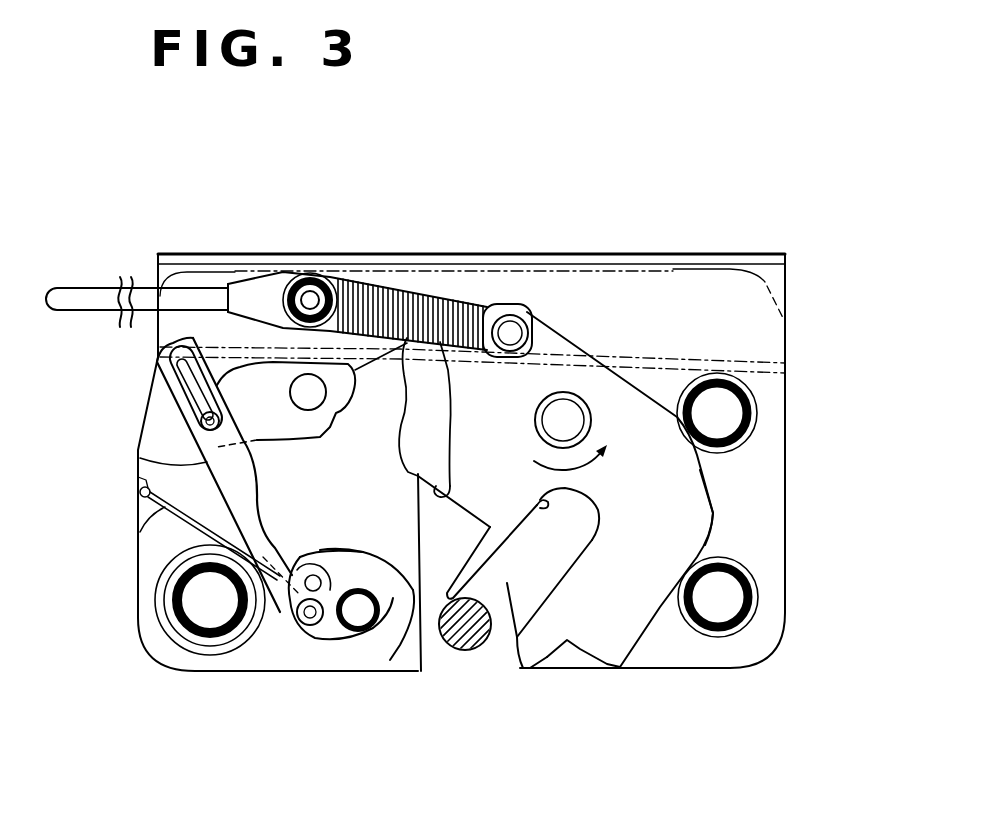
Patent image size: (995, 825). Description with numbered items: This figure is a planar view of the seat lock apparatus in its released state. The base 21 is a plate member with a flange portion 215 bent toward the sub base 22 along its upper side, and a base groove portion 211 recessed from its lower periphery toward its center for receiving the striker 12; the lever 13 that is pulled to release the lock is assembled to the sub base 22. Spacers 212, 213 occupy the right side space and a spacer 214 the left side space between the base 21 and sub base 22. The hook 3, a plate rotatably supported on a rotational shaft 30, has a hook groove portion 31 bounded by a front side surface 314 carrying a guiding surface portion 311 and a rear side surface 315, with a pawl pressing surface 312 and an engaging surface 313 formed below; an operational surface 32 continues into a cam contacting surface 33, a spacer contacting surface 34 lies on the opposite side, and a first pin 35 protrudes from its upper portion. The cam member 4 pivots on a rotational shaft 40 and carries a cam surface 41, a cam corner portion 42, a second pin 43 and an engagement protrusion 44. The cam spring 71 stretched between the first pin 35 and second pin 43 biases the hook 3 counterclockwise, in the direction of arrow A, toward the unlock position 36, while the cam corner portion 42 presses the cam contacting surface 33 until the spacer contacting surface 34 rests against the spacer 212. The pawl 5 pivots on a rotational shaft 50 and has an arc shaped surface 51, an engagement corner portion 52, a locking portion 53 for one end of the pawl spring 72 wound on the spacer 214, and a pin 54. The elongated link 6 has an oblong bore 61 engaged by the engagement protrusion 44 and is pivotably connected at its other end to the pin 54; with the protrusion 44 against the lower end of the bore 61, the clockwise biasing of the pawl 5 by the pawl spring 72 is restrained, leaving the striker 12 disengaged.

The hook 3 is at (642, 535).
The cam member 4 is at (345, 418).
The pawl 5 is at (347, 562).
The link 6 is at (203, 467).
The striker 12 is at (465, 651).
The lever 13 is at (133, 277).
The base 21 is at (742, 246).
The sub base 22 is at (788, 282).
The rotational shaft 30 is at (570, 412).
The hook groove portion 31 is at (503, 602).
The operational surface 32 is at (450, 485).
The cam contacting surface 33 is at (484, 300).
The spacer contacting surface 34 is at (712, 491).
The first pin 35 is at (511, 313).
The unlock position 36 is at (724, 513).
The rotational shaft 40 is at (310, 400).
The cam surface 41 is at (393, 275).
The cam corner portion 42 is at (403, 273).
The second pin 43 is at (310, 272).
The engagement protrusion 44 is at (170, 427).
The rotational shaft 50 is at (356, 632).
The arc shaped surface 51 is at (383, 555).
The engagement corner portion 52 is at (402, 646).
The locking portion 53 is at (288, 605).
The pin 54 is at (310, 626).
The oblong bore 61 is at (157, 381).
The cam spring 71 is at (452, 283).
The pawl spring 72 is at (140, 531).
The base groove portion 211 is at (470, 541).
The spacer 212 is at (758, 412).
The spacer 213 is at (759, 600).
The spacer 214 is at (168, 613).
The flange portion 215 is at (652, 253).
The guiding surface portion 311 is at (421, 671).
The pawl pressing surface 312 is at (531, 672).
The engaging surface 313 is at (580, 660).
The front side surface 314 is at (546, 496).
The rear side surface 315 is at (564, 552).
The arrow A is at (589, 463).